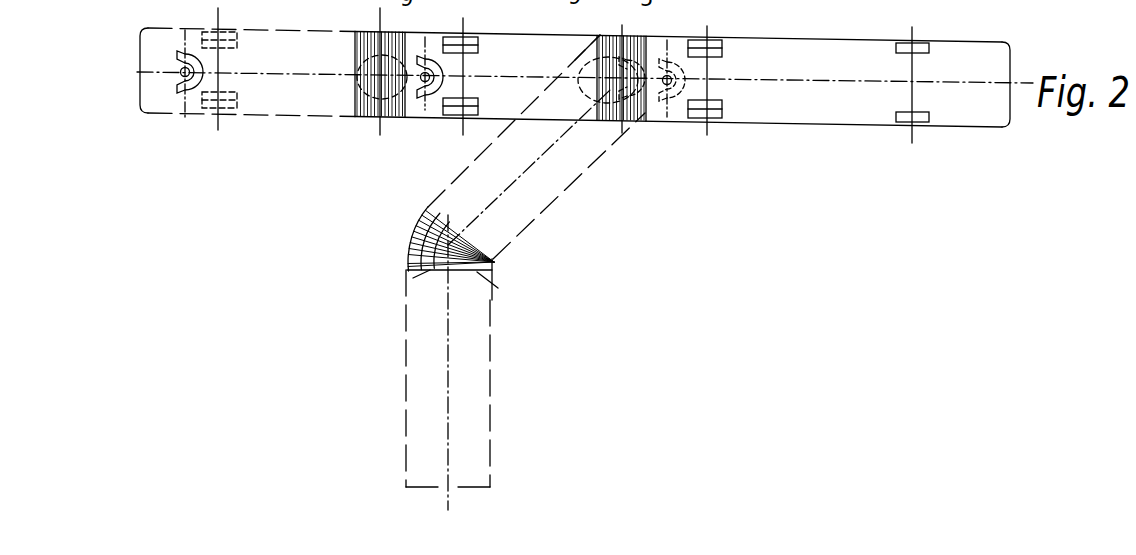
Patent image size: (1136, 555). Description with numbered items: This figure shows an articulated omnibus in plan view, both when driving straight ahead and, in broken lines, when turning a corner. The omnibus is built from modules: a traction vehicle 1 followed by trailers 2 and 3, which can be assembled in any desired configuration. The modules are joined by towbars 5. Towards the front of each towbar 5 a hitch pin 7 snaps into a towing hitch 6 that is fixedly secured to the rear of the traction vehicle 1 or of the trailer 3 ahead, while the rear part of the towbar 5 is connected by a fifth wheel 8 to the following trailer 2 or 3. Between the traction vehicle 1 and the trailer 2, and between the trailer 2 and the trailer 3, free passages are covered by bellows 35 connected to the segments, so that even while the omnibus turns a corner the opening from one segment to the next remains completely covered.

The traction vehicle 1 is at (760, 48).
The trailer 2 is at (503, 58).
The trailer 3 is at (297, 108).
The towbar 5 is at (644, 68).
The towing hitch 6 is at (672, 88).
The hitch pin 7 is at (668, 79).
The fifth wheel 8 is at (621, 115).
The bellows 35 is at (438, 232).